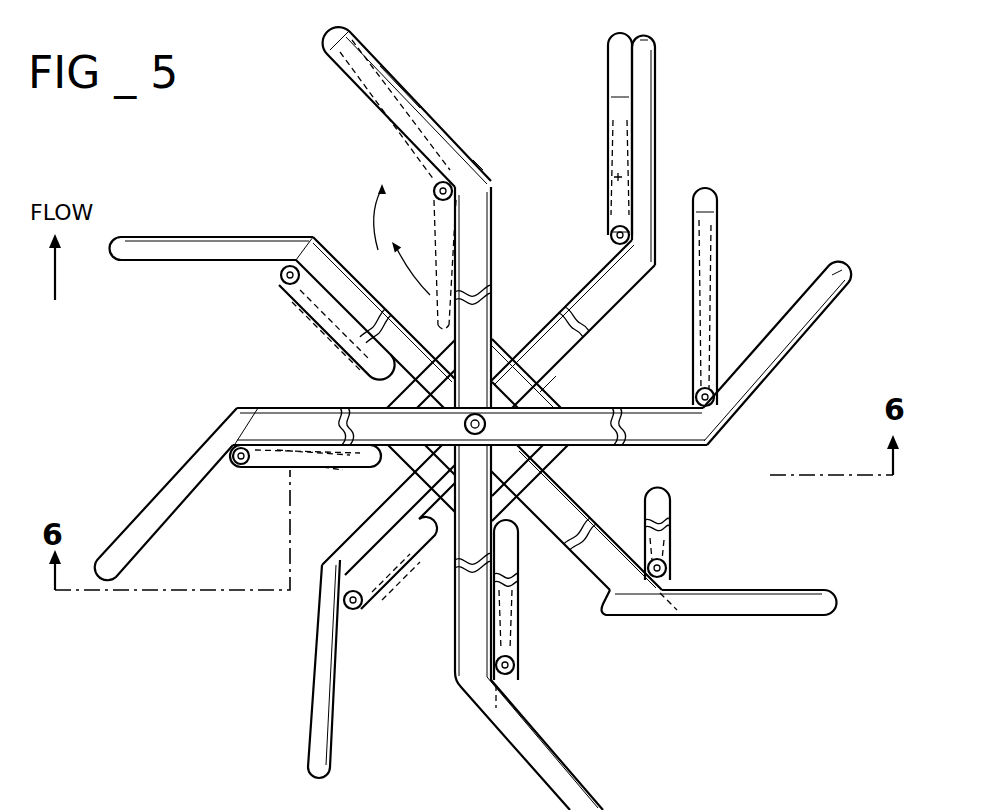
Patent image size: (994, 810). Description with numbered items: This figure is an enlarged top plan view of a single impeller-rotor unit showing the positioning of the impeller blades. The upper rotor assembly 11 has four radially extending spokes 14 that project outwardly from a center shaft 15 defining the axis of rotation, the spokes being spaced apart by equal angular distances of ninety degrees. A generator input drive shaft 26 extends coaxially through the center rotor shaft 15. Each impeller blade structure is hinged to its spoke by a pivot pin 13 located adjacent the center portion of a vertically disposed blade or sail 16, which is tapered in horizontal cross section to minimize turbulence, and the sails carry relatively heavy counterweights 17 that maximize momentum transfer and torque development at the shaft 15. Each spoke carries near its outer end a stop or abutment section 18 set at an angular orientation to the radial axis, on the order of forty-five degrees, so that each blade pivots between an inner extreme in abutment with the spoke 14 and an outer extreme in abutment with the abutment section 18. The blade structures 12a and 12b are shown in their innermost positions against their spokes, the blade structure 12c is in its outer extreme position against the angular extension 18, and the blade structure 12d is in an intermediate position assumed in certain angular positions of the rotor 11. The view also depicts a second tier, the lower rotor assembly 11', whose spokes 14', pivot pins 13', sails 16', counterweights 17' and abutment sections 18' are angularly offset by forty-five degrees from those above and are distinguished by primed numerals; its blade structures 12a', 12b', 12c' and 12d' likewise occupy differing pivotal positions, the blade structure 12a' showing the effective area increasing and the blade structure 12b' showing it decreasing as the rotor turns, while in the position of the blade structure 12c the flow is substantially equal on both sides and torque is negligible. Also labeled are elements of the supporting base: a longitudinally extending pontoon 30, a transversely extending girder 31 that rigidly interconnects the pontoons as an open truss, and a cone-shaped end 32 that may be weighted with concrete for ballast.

The rotor assembly 11 is at (869, 257).
The lower rotor assembly 11' is at (693, 69).
The impeller blade structure 12a is at (540, 614).
The impeller blade structure of lower rotor assembly 12a' is at (408, 552).
The impeller blade structure 12b is at (305, 482).
The impeller blade structure of lower rotor assembly 12b' is at (336, 339).
The impeller blade structure 12c is at (389, 184).
The impeller blade structure of lower rotor assembly 12c' is at (655, 134).
The impeller blade structure 12d is at (742, 296).
The impeller blade structure of lower rotor assembly 12d' is at (696, 549).
The pivot pin 13 is at (662, 287).
The pivot pin of lower rotor assembly 13' is at (410, 275).
The spoke 14 is at (428, 498).
The spoke of lower rotor assembly 14' is at (479, 410).
The center shaft 15 is at (487, 427).
The blade or sail 16 is at (486, 490).
The blade or sail of lower rotor assembly 16' is at (430, 426).
The counterweight 17 is at (735, 195).
The counterweight of lower rotor assembly 17' is at (441, 231).
The abutment section 18 is at (407, 107).
The abutment section of lower rotor assembly 18' is at (473, 407).
The generator input drive shaft 26 is at (463, 424).
The pontoon 30 is at (558, 390).
The girder 31 is at (414, 102).
The cone-shaped end 32 is at (348, 51).